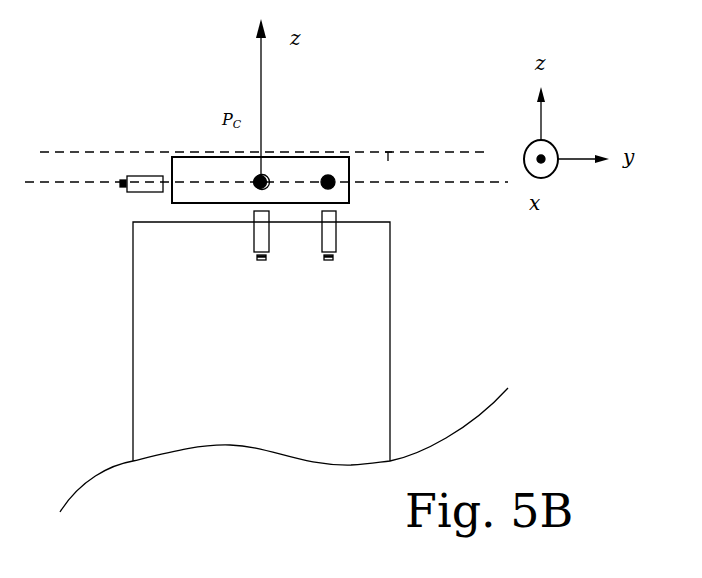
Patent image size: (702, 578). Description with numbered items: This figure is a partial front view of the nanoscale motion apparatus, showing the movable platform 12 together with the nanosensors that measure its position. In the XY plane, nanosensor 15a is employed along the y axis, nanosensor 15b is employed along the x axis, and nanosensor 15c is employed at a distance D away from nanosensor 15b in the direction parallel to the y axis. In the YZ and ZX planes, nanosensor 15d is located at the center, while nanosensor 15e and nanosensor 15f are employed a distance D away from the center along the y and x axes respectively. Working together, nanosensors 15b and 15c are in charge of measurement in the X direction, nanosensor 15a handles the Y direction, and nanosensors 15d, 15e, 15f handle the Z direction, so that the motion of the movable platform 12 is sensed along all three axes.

The movable platform 12 is at (389, 152).
The nanosensor 15a is at (146, 182).
The nanosensor 15b is at (262, 176).
The nanosensor 15c is at (349, 181).
The nanosensor 15d is at (258, 237).
The nanosensor 15e is at (327, 237).
The nanosensor 15f is at (195, 298).